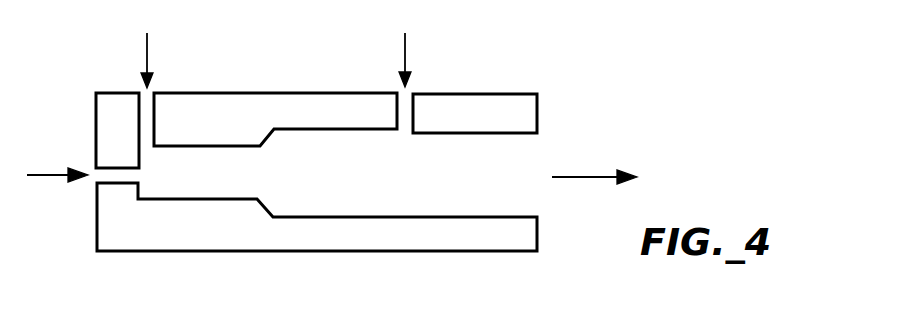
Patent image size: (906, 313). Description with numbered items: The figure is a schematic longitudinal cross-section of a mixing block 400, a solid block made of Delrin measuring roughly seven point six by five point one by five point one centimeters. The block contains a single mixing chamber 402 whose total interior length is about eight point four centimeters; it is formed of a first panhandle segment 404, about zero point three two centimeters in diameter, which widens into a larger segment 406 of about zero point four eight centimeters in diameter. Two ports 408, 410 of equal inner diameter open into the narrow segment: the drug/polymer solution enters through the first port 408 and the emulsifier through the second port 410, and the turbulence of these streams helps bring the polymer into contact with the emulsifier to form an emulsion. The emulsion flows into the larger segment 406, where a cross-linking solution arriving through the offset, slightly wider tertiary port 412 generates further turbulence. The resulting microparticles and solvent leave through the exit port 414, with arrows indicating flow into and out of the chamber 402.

The mixing block 400 is at (612, 72).
The mixing chamber 402 is at (300, 187).
The first panhandle segment 404 is at (221, 184).
The larger segment 406 is at (402, 188).
The first port 408 is at (101, 177).
The second port 410 is at (148, 102).
The tertiary port 412 is at (405, 102).
The exit port 414 is at (557, 157).